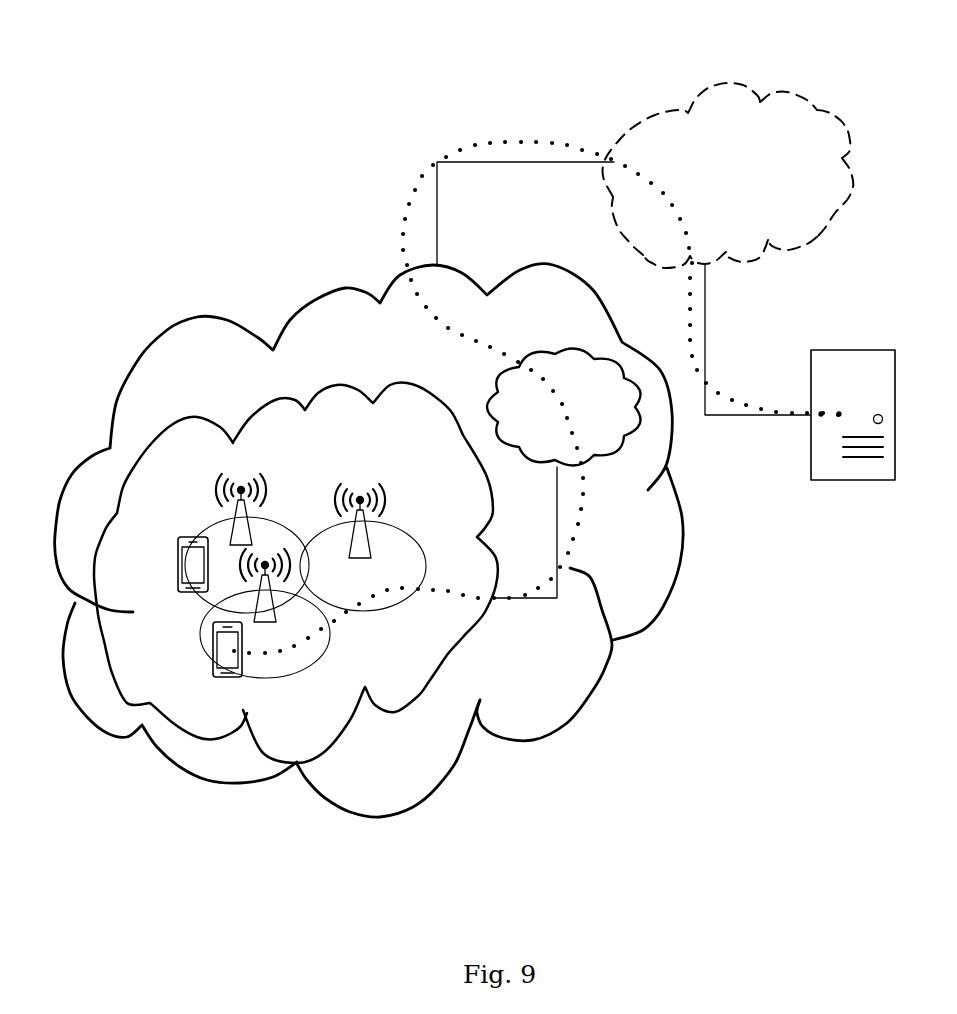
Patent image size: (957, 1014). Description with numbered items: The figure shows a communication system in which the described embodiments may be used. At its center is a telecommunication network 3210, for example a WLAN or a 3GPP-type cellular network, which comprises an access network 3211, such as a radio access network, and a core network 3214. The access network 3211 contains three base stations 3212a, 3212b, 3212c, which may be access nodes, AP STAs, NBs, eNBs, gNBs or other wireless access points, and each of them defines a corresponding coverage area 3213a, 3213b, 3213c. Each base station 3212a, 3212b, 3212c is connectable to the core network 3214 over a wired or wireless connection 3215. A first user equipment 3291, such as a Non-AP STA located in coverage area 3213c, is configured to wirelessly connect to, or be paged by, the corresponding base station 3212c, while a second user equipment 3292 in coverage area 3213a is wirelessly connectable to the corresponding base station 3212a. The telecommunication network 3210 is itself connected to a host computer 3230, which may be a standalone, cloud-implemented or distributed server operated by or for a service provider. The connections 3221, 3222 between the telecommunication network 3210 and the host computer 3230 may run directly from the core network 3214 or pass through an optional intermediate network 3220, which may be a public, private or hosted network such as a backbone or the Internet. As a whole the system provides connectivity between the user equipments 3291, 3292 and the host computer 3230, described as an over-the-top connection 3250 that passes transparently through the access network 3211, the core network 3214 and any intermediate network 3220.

The telecommunication network 3210 is at (396, 337).
The access network 3211 is at (351, 447).
The base station 3212a is at (272, 623).
The base station 3212b is at (390, 500).
The base station 3212c is at (228, 497).
The coverage area 3213a is at (332, 634).
The coverage area 3213b is at (395, 535).
The coverage area 3213c is at (197, 527).
The core network 3214 is at (641, 419).
The wired or wireless connection 3215 is at (558, 512).
The intermediate network 3220 is at (759, 187).
The connection 3221 is at (520, 162).
The connection 3222 is at (763, 418).
The host computer 3230 is at (853, 430).
The over-the-top (OTT) connection 3250 is at (413, 187).
The first user equipment 3291 is at (176, 592).
The second user equipment 3292 is at (212, 669).